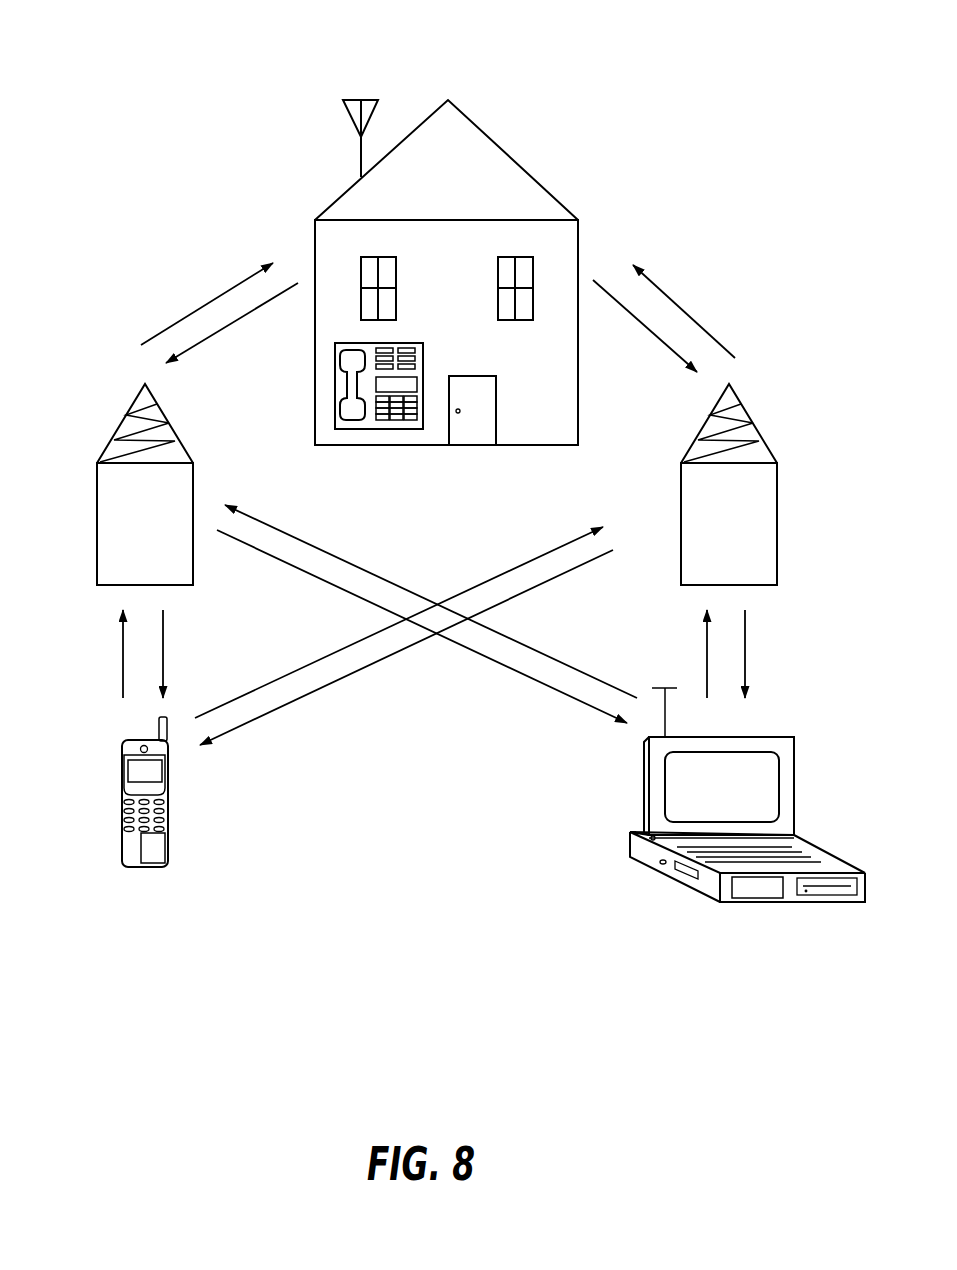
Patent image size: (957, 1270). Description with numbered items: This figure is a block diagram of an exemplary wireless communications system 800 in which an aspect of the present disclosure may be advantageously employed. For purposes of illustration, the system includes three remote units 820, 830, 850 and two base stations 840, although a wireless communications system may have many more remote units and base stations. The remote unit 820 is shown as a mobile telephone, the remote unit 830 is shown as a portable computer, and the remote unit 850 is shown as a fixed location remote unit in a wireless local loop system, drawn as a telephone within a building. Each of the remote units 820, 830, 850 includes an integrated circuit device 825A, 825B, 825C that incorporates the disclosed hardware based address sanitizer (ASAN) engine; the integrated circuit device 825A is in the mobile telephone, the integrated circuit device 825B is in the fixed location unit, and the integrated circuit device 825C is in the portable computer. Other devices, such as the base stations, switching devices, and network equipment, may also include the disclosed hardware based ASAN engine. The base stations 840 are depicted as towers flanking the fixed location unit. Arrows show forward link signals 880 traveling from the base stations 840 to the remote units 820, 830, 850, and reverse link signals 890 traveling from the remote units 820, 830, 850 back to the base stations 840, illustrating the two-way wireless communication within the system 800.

The wireless communications system 800 is at (172, 82).
The remote unit 820 is at (121, 820).
The integrated circuit device 825A is at (152, 857).
The integrated circuit device 825B is at (410, 385).
The integrated circuit device 825C is at (760, 888).
The remote unit 830 is at (747, 814).
The base station 840 is at (123, 420).
The remote unit 850 is at (384, 383).
The forward link signals 880 is at (212, 300).
The reverse link signals 890 is at (235, 323).